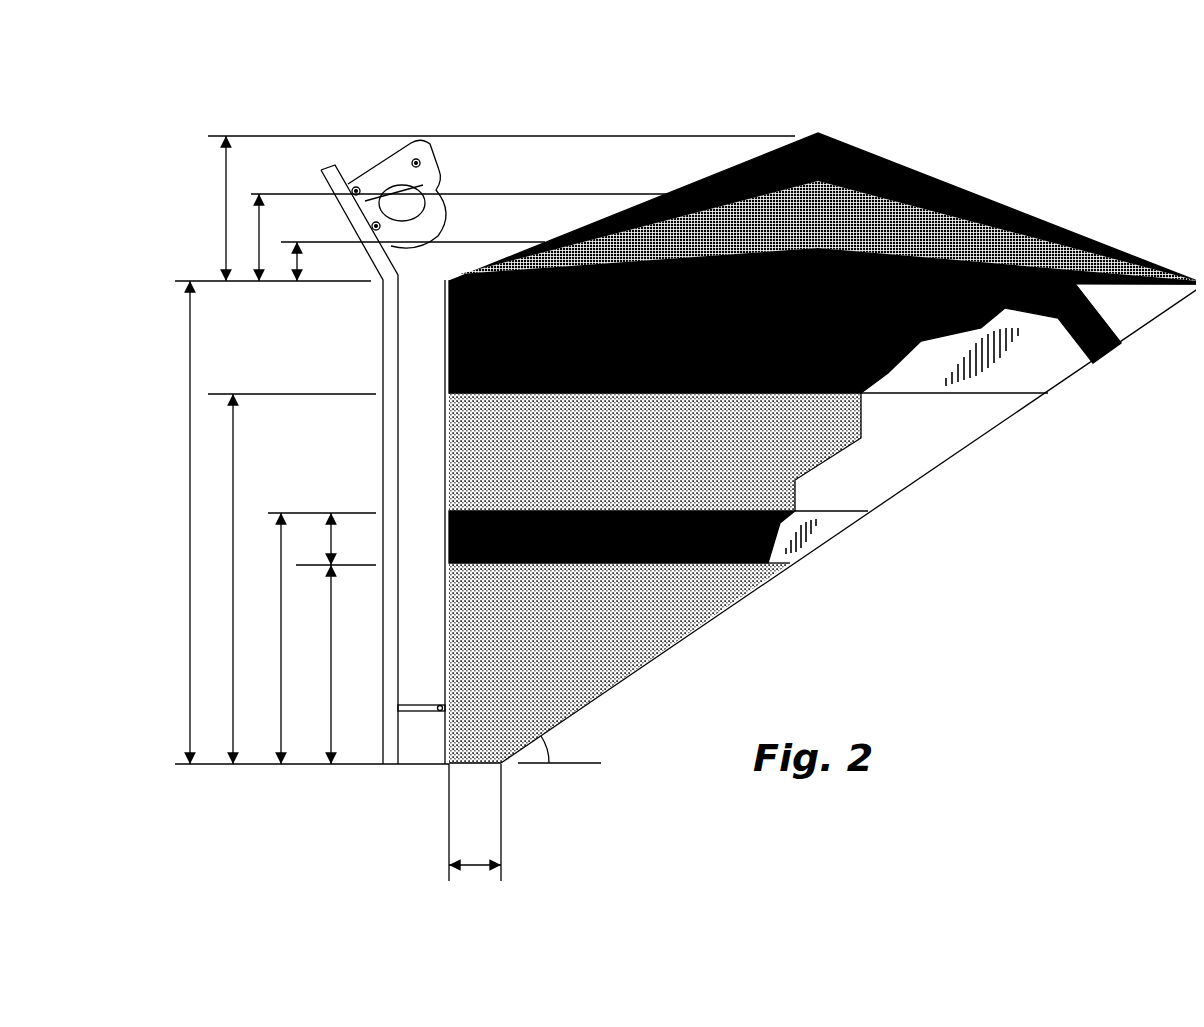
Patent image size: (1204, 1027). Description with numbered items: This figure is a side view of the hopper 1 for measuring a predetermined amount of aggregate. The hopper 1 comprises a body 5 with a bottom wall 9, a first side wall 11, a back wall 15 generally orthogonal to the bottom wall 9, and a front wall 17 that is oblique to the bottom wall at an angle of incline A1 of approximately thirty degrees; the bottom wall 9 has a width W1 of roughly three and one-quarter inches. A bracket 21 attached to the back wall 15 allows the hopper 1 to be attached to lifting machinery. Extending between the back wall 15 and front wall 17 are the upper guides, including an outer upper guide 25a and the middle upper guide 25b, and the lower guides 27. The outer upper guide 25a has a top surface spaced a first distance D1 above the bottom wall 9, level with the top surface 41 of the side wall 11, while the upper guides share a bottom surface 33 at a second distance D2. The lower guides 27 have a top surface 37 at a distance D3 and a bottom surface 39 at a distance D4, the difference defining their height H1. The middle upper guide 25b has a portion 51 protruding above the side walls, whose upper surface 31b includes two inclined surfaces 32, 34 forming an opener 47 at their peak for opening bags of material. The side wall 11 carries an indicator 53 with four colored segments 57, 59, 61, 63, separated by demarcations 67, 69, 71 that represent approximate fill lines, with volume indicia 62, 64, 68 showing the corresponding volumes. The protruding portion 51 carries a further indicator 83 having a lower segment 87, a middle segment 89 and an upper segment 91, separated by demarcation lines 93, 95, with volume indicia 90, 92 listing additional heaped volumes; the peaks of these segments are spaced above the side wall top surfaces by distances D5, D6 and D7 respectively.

The hopper 1 is at (1135, 250).
The body 5 is at (440, 758).
The bottom wall 9 is at (470, 758).
The first side wall 11 is at (597, 663).
The back wall 15 is at (437, 272).
The front wall 17 is at (930, 458).
The bracket 21 is at (395, 747).
The outer upper guide 25a is at (1027, 360).
The middle upper guide 25b is at (1030, 210).
The lower guides 27 is at (797, 527).
The upper surface of middle upper guide 31b is at (903, 155).
The inclined surface 32 is at (920, 167).
The bottom surface of upper guides 33 is at (987, 388).
The inclined surface 34 is at (622, 197).
The top surface of lower guides 37 is at (827, 500).
The bottom surface of lower guides 39 is at (780, 547).
The top surface of first side wall 41 is at (565, 220).
The opener 47 is at (812, 120).
The protruding portion 51 is at (967, 185).
The indicator 53 is at (663, 610).
The first colored segment 57 is at (622, 640).
The second colored segment 59 is at (440, 522).
The third colored segment 61 is at (445, 420).
The volume indicia 62 is at (712, 580).
The fourth colored segment 63 is at (480, 257).
The volume indicia 64 is at (652, 505).
The demarcation 67 is at (705, 618).
The volume indicia 68 is at (652, 192).
The demarcation 69 is at (468, 468).
The demarcation 71 is at (437, 325).
The indicator 83 is at (840, 133).
The lower segment 87 is at (1067, 227).
The middle segment 89 is at (950, 183).
The volume indicia 90 is at (768, 143).
The upper segment 91 is at (732, 150).
The volume indicia 92 is at (798, 126).
The demarcation line 93 is at (993, 193).
The demarcation line 95 is at (700, 167).
The first distance D1 is at (182, 522).
The second distance D2 is at (225, 480).
The first distance of lower guides D3 is at (273, 633).
The second distance of lower guides D4 is at (323, 647).
The distance D5 is at (289, 257).
The distance D6 is at (251, 224).
The distance D7 is at (218, 168).
The height of lower guides H1 is at (317, 530).
The width of bottom wall W1 is at (467, 852).
The angle of incline A1 is at (573, 755).